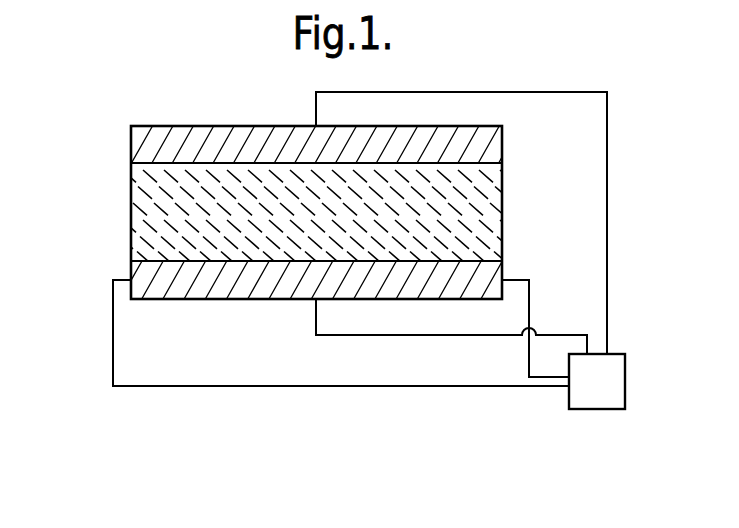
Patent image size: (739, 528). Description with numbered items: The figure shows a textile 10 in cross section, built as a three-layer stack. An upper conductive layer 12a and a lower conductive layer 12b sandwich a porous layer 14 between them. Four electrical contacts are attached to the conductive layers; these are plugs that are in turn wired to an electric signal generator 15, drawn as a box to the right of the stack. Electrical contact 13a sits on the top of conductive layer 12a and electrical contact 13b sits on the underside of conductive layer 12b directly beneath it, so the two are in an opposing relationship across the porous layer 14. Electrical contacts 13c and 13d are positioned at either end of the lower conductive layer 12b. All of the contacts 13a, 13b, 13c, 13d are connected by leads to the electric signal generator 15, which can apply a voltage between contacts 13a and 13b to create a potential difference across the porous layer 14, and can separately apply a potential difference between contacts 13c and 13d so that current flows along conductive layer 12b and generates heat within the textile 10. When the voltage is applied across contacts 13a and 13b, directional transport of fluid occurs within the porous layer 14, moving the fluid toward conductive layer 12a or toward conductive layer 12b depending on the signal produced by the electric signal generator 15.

The textile 10 is at (122, 195).
The conductive layer 12a is at (150, 134).
The conductive layer 12b is at (168, 290).
The electrical contact 13a is at (315, 125).
The electrical contact 13b is at (312, 300).
The electrical contact 13c is at (502, 281).
The electrical contact 13d is at (131, 283).
The porous layer 14 is at (479, 193).
The electric signal generator 15 is at (583, 393).